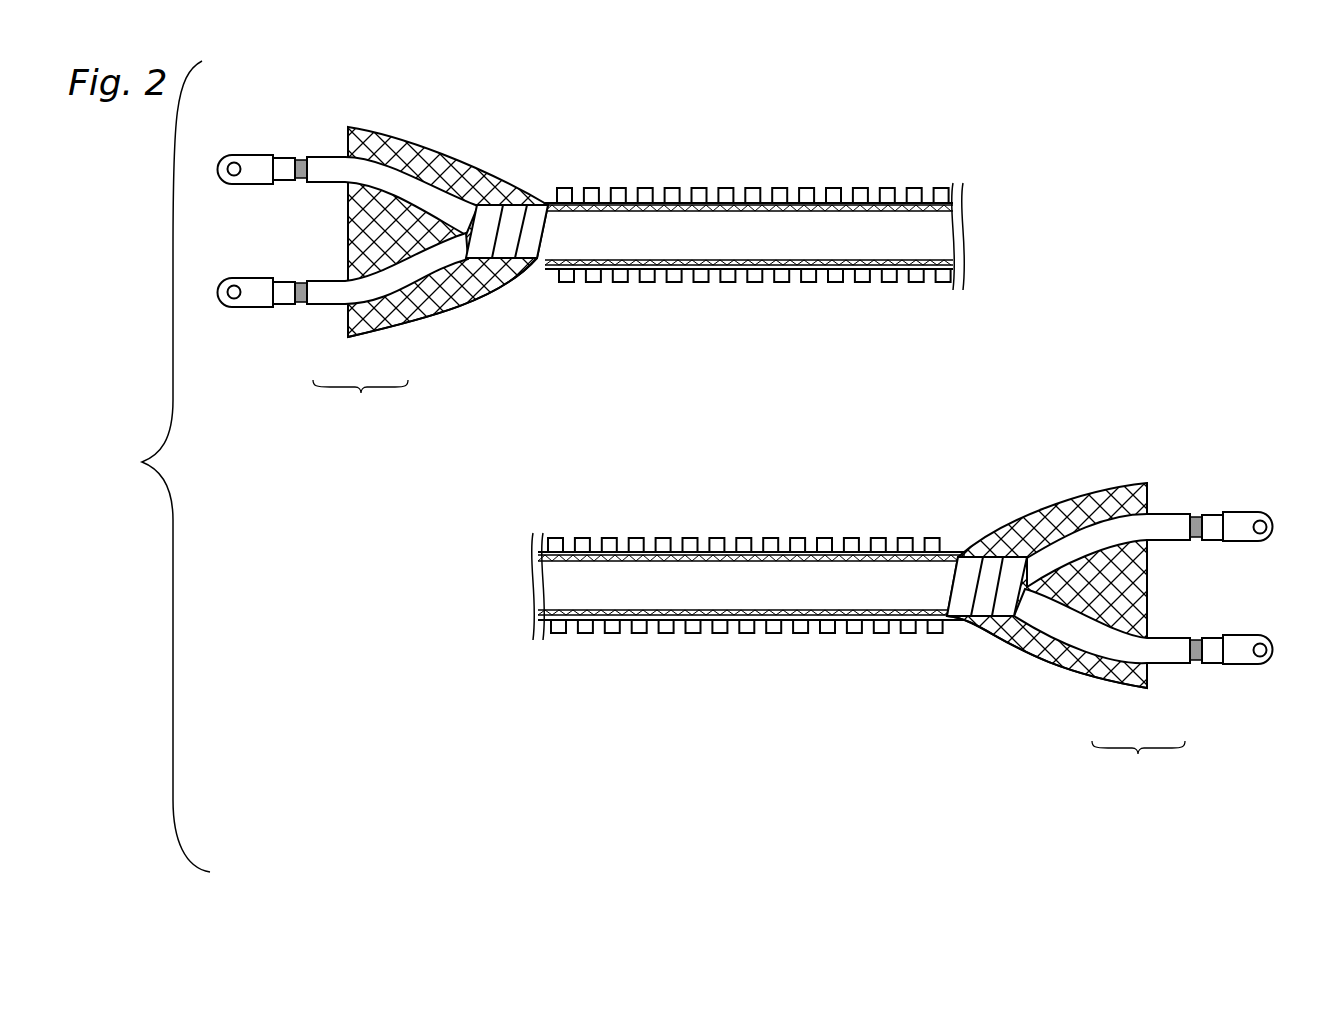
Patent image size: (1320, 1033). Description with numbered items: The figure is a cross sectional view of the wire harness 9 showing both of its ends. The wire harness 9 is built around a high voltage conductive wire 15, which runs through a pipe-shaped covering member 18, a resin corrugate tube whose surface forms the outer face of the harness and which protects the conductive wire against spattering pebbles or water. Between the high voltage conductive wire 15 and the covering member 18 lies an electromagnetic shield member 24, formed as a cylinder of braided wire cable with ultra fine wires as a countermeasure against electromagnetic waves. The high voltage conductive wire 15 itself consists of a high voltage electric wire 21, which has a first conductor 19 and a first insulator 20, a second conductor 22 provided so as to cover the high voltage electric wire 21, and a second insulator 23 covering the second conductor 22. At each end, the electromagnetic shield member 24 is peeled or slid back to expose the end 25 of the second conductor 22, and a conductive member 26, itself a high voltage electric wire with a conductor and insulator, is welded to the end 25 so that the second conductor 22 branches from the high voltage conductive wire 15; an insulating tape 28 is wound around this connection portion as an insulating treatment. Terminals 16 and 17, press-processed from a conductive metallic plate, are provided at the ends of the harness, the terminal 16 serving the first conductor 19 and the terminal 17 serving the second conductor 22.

The wire harness 9 is at (1041, 187).
The high voltage conductive wire 15 is at (710, 222).
The terminal 16 is at (258, 302).
The terminal 17 is at (258, 163).
The covering member 18 is at (808, 188).
The first conductor 19 is at (301, 303).
The first insulator 20 is at (378, 287).
The high voltage electric wire 21 is at (749, 581).
The second conductor 22 is at (532, 225).
The second insulator 23 is at (630, 243).
The electromagnetic shield member 24 is at (460, 302).
The end of the second conductor 25 is at (508, 218).
The conductive member 26 is at (403, 190).
The insulating tape 28 is at (523, 250).